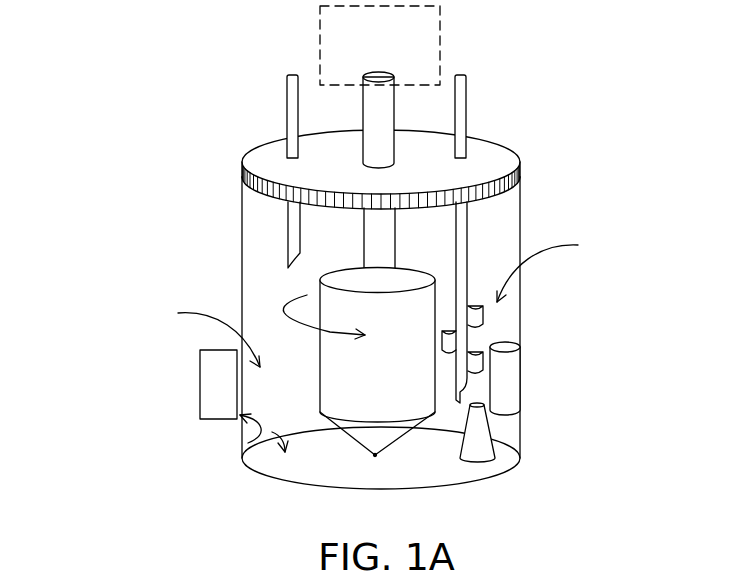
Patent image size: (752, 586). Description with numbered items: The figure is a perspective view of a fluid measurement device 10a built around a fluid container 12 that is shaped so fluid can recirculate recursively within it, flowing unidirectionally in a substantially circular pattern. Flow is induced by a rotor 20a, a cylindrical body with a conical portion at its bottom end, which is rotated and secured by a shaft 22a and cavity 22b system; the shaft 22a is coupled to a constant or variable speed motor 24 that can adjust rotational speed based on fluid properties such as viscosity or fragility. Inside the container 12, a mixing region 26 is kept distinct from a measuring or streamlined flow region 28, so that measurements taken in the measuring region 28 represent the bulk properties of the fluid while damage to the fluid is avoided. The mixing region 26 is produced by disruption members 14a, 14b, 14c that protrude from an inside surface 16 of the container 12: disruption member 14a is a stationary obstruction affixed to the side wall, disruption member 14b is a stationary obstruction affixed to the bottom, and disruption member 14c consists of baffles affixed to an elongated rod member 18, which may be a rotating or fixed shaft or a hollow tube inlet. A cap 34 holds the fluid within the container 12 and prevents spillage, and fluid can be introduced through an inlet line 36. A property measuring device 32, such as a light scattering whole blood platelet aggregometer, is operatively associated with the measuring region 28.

The mixing apparatus 10a is at (343, 263).
The fluid container 12 is at (241, 265).
The disruption member 14a is at (505, 380).
The disruption member 14b is at (480, 443).
The disruption member 14c is at (483, 318).
The inside surface 16 is at (290, 428).
The elongated rod member 18 is at (467, 113).
The rotor 20a is at (358, 377).
The shaft 22a is at (380, 115).
The cavity 22b is at (375, 455).
The motor 24 is at (367, 54).
The mixing region 26 is at (555, 267).
The measuring region 28 is at (202, 336).
The property measuring device 32 is at (218, 385).
The cap 34 is at (265, 163).
The inlet line 36 is at (287, 110).